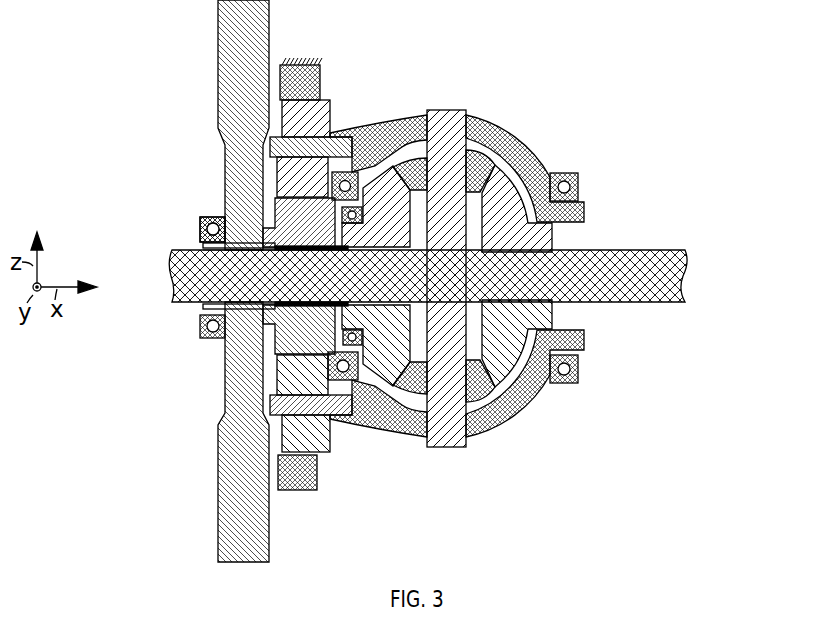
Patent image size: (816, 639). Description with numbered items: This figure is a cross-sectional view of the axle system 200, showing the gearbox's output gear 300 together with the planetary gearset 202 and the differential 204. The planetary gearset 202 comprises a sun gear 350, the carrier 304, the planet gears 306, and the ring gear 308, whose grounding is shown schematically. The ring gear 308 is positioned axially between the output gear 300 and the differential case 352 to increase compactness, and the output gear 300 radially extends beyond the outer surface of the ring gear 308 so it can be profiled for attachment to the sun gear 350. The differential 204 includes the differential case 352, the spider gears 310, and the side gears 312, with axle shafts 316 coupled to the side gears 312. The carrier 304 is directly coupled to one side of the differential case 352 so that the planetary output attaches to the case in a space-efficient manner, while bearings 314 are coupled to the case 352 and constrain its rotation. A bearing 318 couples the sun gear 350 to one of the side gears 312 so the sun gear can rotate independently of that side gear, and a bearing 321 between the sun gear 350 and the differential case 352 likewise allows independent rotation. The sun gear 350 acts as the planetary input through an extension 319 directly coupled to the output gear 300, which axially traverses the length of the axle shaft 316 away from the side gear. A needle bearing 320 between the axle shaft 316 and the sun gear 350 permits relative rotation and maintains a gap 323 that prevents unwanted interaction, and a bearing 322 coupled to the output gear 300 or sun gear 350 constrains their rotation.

The axle system 200 is at (647, 63).
The planetary gearset 202 is at (281, 258).
The differential 204 is at (561, 208).
The output gear 300 is at (227, 42).
The carrier 304 is at (337, 148).
The planet gears 306 is at (327, 100).
The ring gear 308 is at (308, 478).
The spider gears 310 is at (477, 168).
The side gears 312 is at (510, 190).
The bearings 314 is at (578, 178).
The axle shafts 316 is at (640, 263).
The bearing 318 is at (358, 340).
The extension 319 is at (207, 243).
The bearing 320 is at (302, 248).
The bearing 321 is at (350, 180).
The bearing 322 is at (200, 225).
The gap 323 is at (228, 250).
The sun gear 350 is at (300, 215).
The differential case 352 is at (527, 175).